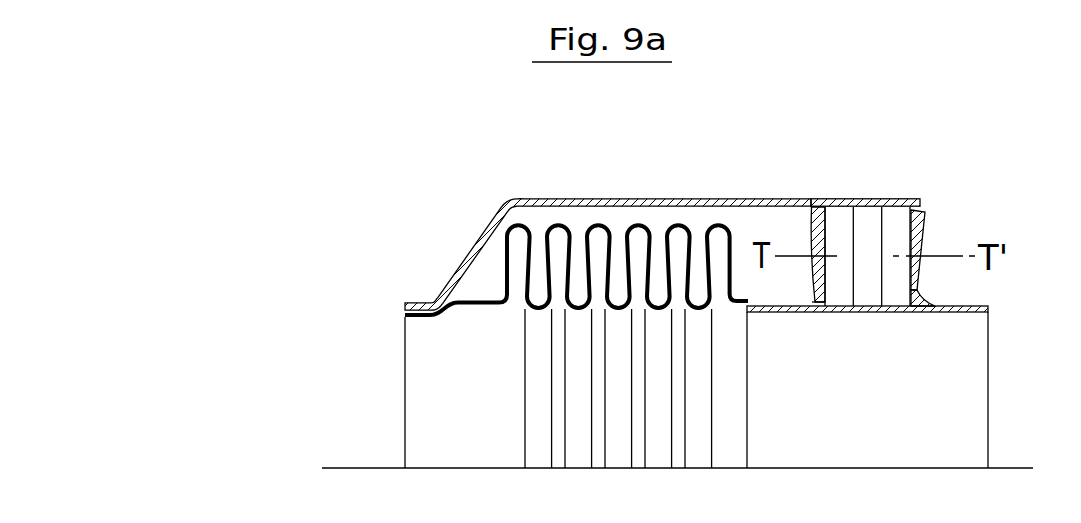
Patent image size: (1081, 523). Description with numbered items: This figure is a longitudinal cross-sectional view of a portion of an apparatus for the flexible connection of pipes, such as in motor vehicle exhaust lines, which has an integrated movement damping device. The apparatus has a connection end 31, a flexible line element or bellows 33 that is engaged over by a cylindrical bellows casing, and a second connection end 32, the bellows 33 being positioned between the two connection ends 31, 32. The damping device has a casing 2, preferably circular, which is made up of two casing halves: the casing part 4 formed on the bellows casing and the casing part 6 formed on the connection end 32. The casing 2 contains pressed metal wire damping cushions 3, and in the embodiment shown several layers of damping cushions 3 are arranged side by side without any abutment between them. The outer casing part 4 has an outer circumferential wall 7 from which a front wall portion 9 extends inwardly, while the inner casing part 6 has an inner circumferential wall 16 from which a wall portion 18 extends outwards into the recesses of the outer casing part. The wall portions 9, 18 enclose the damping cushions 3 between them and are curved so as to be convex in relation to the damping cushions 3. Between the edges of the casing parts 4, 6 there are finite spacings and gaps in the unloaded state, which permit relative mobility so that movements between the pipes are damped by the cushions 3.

The connection end 31 is at (443, 298).
The bellows 33 is at (538, 295).
The outer circumferential wall 7 is at (820, 203).
The damping cushion 3 is at (887, 210).
The casing part 4 is at (908, 187).
The casing 2 is at (930, 207).
The front wall portion 9 is at (810, 295).
The wall portion 18 is at (923, 292).
The inner circumferential wall 16 is at (803, 315).
The casing part 6 is at (855, 320).
The connection end 32 is at (962, 315).